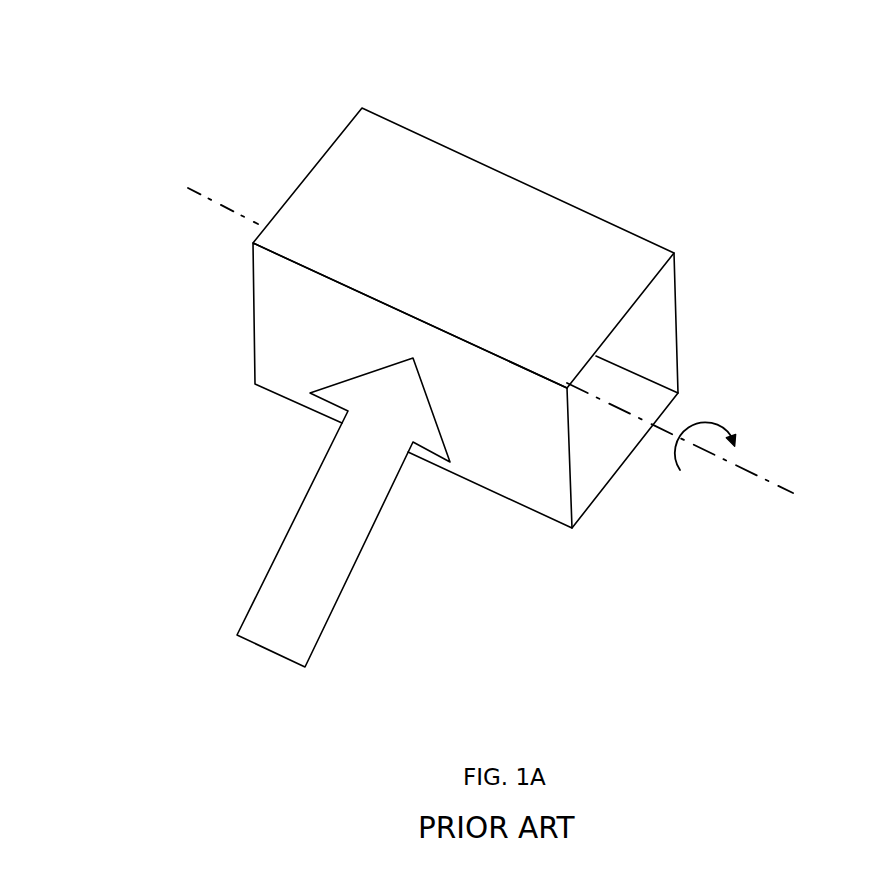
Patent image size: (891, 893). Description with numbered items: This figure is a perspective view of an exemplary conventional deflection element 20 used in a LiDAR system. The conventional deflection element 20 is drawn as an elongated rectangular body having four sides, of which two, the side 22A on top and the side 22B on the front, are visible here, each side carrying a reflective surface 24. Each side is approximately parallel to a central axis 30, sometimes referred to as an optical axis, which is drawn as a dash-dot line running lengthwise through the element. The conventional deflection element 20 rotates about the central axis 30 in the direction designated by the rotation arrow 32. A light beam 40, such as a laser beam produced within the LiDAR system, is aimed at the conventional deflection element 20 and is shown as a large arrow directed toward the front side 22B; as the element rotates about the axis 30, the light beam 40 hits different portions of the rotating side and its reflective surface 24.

The conventional deflection element 20 is at (519, 331).
The side 22A is at (542, 227).
The side 22B is at (483, 442).
The reflective surface 24 is at (463, 356).
The central axis 30 is at (798, 502).
The rotation arrow 32 is at (725, 420).
The light beam 40 is at (285, 663).